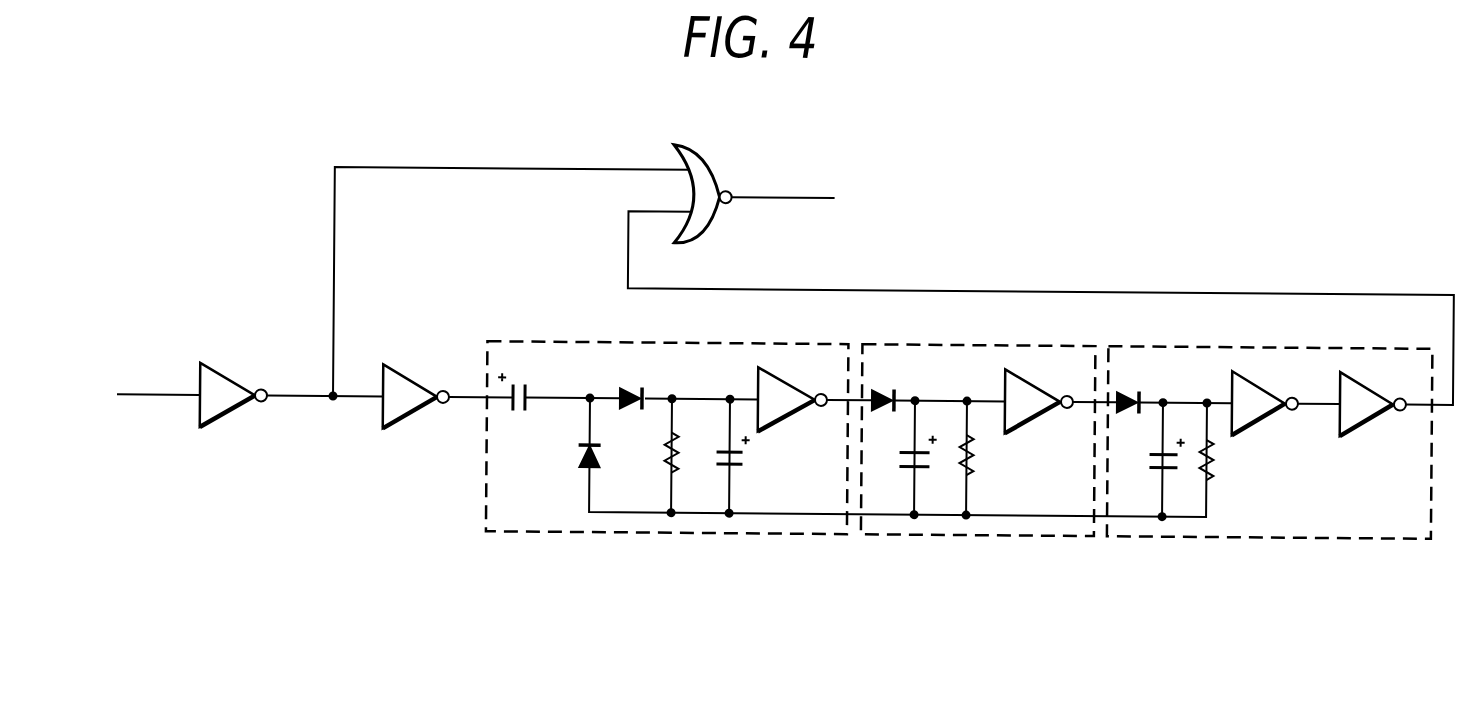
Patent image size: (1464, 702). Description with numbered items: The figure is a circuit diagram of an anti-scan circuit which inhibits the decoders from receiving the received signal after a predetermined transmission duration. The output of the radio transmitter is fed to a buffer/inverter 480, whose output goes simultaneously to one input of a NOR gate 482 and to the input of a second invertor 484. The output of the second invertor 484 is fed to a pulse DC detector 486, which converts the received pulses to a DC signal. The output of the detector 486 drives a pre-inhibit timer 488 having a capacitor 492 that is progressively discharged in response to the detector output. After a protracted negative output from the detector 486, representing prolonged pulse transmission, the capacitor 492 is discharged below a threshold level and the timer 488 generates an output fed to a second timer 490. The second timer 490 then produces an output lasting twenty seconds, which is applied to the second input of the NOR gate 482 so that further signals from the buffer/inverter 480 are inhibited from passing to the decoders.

The buffer/inverter 480 is at (226, 420).
The second invertor 484 is at (407, 420).
The NOR gate 482 is at (703, 158).
The pulse DC detector 486 is at (543, 480).
The pre-inhibit timer 488 is at (977, 467).
The second timer 490 is at (1337, 457).
The capacitor 492 is at (895, 457).